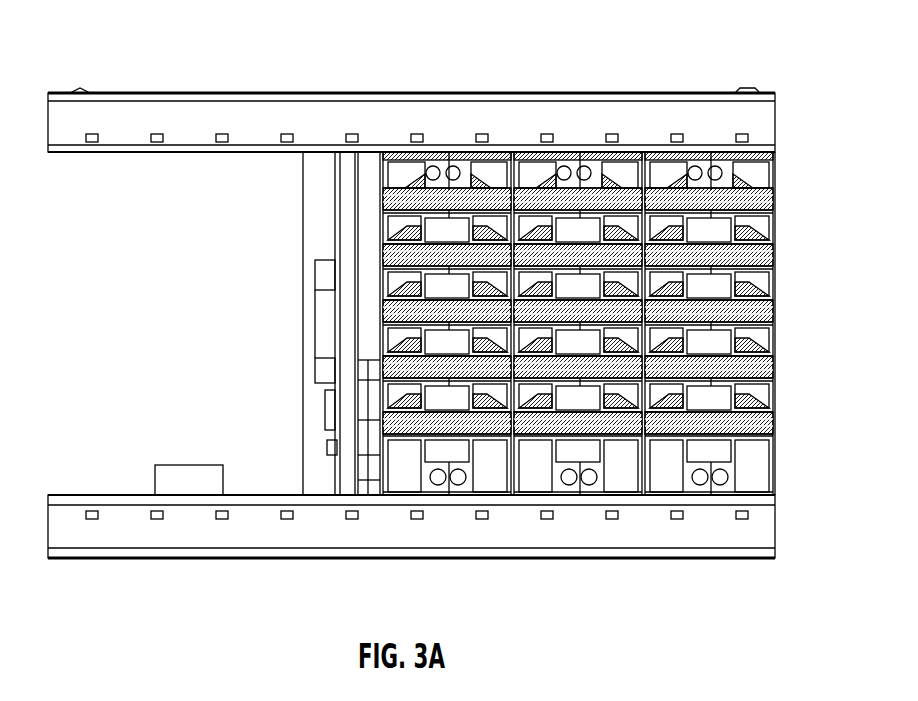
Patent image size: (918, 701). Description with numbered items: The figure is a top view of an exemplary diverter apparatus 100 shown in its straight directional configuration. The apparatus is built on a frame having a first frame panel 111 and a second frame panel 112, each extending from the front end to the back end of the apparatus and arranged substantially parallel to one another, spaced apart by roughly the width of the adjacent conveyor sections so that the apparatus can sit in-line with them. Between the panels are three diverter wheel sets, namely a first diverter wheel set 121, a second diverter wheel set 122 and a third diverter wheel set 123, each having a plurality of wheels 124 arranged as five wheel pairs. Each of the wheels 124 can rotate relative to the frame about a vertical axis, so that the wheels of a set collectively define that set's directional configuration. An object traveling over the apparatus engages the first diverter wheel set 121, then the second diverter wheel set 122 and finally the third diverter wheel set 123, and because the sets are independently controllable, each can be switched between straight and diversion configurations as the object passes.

The diverter apparatus 100 is at (290, 617).
The first frame panel 111 is at (205, 535).
The second frame panel 112 is at (242, 120).
The first diverter wheel set 121 is at (689, 311).
The second diverter wheel set 122 is at (578, 137).
The third diverter wheel set 123 is at (442, 137).
The wheels 124 is at (678, 465).